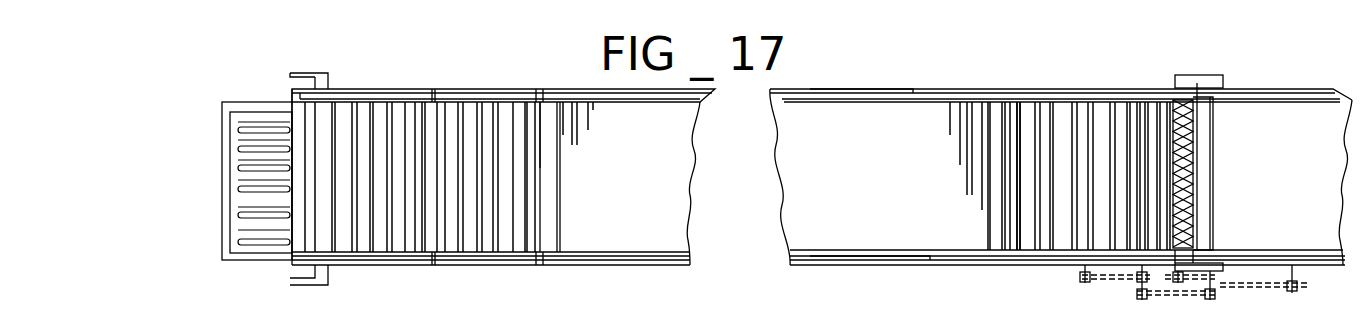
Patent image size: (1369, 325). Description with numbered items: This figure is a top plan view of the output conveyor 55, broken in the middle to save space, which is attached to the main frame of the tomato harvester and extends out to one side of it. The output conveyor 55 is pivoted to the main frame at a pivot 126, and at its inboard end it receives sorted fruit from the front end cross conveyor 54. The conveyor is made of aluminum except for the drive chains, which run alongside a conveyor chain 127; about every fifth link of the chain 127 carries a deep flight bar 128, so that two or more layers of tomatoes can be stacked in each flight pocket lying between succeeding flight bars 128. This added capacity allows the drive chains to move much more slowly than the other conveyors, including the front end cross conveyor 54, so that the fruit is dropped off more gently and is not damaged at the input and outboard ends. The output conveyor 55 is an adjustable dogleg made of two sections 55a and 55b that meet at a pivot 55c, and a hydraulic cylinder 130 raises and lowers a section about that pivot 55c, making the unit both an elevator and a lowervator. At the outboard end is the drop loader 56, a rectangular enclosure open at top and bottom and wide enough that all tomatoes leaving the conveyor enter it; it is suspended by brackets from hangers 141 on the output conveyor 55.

The front end cross conveyor 54 is at (1295, 110).
The output conveyor 55 is at (933, 78).
The conveyor section 55a is at (690, 264).
The conveyor section 55b is at (460, 267).
The pivot 55c is at (562, 267).
The drop loader 56 is at (222, 190).
The pivot 126 is at (1215, 297).
The conveyor chain 127 is at (1018, 262).
The flight bars 128 is at (1094, 242).
The hydraulic cylinder 130 is at (1193, 42).
The hangers 141 is at (310, 286).